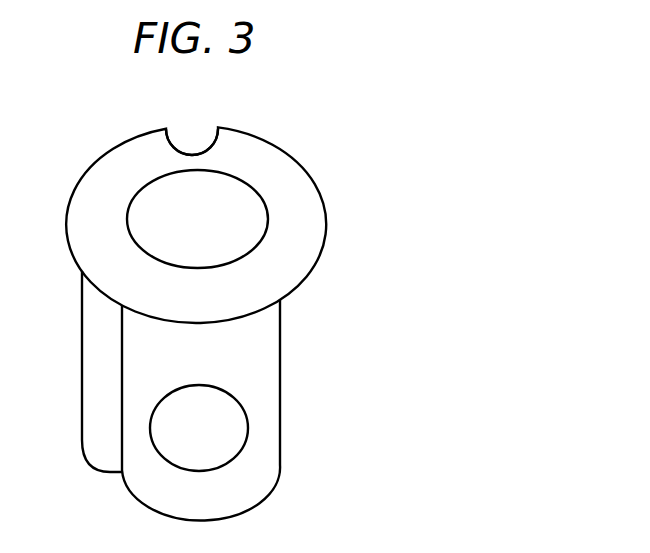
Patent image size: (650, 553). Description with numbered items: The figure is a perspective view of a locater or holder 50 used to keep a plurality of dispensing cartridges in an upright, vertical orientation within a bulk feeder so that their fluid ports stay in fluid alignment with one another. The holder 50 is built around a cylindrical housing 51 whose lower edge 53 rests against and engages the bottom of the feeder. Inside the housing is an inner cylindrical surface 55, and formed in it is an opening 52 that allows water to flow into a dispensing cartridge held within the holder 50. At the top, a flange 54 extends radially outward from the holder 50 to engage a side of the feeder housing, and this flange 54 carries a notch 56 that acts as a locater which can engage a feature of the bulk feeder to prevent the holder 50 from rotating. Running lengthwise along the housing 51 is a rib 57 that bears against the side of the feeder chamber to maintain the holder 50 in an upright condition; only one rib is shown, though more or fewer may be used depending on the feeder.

The locater or holder 50 is at (316, 148).
The cylindrical housing 51 is at (253, 350).
The opening 52 is at (231, 430).
The lower edge 53 is at (247, 510).
The flange 54 is at (287, 270).
The inner cylindrical surface 55 is at (132, 205).
The notch 56 is at (170, 140).
The rib 57 is at (95, 360).